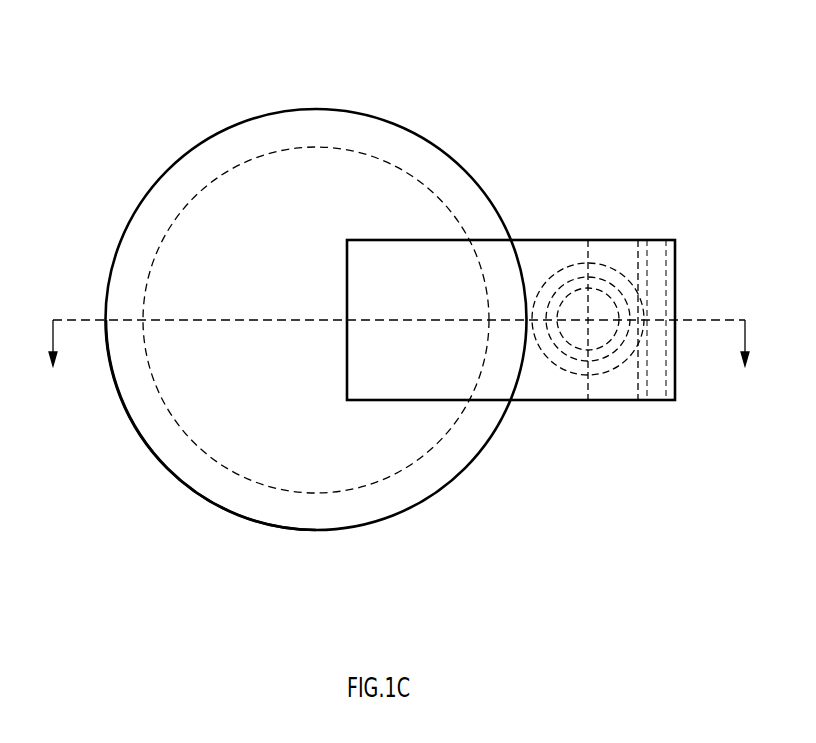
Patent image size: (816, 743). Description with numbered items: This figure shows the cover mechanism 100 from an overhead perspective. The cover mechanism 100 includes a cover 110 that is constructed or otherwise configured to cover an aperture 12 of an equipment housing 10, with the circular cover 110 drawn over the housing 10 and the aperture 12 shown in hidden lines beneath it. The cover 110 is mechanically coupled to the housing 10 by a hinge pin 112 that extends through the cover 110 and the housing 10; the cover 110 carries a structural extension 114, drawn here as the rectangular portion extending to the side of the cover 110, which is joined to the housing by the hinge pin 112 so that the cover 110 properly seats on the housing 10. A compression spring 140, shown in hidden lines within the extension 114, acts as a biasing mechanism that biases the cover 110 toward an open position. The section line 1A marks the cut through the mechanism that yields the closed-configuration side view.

The equipment housing 10 is at (430, 146).
The aperture 12 is at (275, 167).
The cover mechanism 100 is at (566, 104).
The cover 110 is at (147, 426).
The hinge pin 112 is at (656, 392).
The structural extension 114 is at (676, 262).
The compression spring 140 is at (560, 290).
The section line 1A- 1A is at (400, 362).